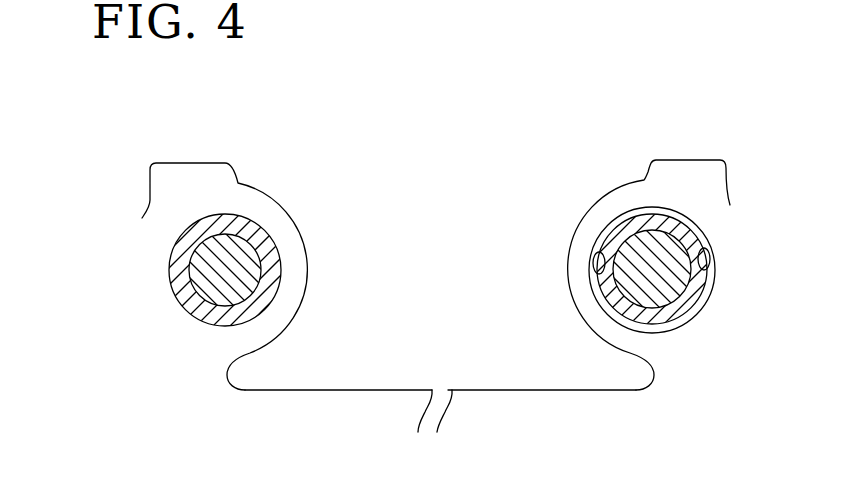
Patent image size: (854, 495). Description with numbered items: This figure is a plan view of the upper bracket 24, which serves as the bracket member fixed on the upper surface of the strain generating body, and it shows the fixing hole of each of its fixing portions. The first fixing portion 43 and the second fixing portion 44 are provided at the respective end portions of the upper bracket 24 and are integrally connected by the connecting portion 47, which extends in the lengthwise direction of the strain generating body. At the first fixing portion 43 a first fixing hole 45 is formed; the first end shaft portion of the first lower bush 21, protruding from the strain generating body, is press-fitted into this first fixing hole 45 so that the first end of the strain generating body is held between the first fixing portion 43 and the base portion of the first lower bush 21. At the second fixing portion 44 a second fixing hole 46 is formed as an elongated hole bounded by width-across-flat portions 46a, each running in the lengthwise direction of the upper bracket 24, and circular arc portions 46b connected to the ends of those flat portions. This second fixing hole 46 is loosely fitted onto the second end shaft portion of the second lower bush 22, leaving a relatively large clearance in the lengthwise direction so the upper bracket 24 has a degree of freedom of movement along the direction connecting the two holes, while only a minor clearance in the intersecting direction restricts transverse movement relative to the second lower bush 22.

The first lower bush 21 is at (263, 240).
The second lower bush 22 is at (613, 238).
The upper bracket 24 is at (372, 380).
The first fixing portion 43 is at (194, 179).
The second fixing portion 44 is at (684, 180).
The first fixing hole 45 is at (190, 264).
The second fixing hole 46 is at (672, 287).
The width-across-flat portion 46a is at (654, 208).
The circular arc portion 46b is at (597, 272).
The connecting portion 47 is at (492, 407).